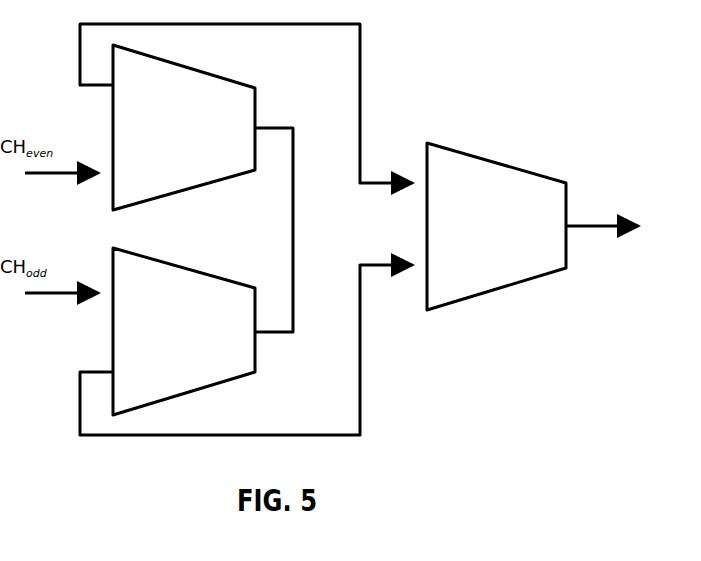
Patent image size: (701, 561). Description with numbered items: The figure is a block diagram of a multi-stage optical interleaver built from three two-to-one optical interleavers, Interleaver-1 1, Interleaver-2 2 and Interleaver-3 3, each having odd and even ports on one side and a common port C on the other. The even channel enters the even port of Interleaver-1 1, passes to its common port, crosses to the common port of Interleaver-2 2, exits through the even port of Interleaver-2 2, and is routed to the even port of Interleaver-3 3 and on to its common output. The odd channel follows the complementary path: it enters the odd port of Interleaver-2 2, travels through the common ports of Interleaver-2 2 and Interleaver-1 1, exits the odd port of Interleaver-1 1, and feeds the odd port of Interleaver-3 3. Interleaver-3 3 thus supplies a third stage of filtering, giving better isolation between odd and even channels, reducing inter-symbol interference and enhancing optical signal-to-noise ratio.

The Interleaver- 1 is at (184, 127).
The Interleaver- 2 is at (184, 331).
The Interleaver- 3 is at (496, 226).